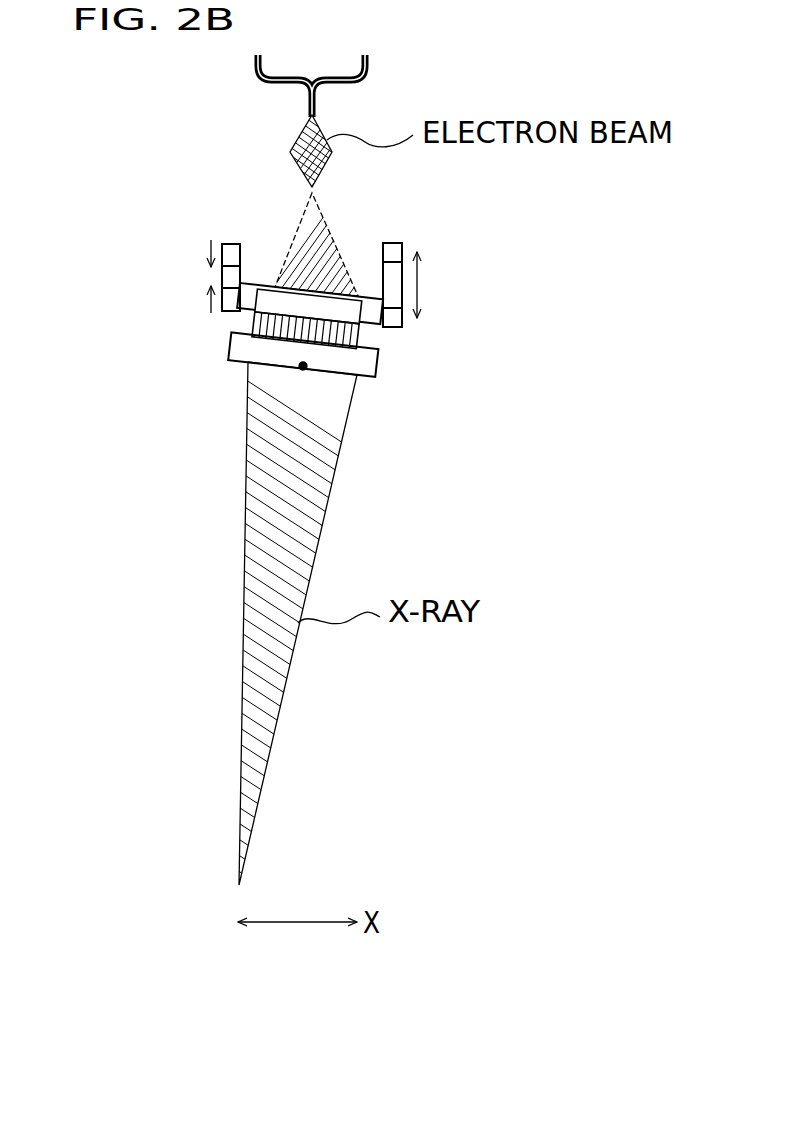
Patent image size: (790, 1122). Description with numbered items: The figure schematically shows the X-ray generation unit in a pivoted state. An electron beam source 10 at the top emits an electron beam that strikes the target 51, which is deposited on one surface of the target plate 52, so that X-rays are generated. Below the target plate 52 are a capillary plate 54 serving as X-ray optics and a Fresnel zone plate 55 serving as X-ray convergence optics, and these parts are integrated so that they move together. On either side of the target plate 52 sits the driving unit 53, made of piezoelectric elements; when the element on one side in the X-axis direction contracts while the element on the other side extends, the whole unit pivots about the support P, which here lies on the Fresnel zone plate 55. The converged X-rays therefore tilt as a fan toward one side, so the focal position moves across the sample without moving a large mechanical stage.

The electron beam source 10 is at (367, 58).
The target 51 is at (347, 278).
The target plate 52 is at (256, 278).
The driving unit 53 is at (402, 245).
The capillary plate 54 is at (257, 322).
The Fresnel zone plate 55 is at (380, 368).
The support P is at (306, 365).